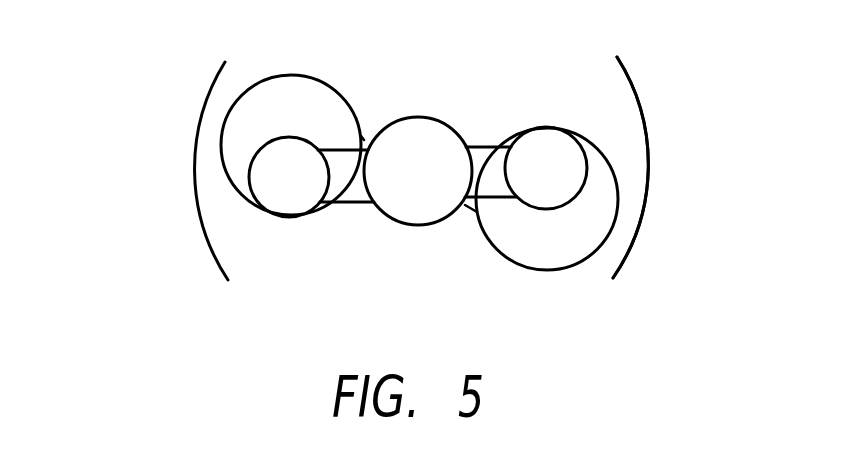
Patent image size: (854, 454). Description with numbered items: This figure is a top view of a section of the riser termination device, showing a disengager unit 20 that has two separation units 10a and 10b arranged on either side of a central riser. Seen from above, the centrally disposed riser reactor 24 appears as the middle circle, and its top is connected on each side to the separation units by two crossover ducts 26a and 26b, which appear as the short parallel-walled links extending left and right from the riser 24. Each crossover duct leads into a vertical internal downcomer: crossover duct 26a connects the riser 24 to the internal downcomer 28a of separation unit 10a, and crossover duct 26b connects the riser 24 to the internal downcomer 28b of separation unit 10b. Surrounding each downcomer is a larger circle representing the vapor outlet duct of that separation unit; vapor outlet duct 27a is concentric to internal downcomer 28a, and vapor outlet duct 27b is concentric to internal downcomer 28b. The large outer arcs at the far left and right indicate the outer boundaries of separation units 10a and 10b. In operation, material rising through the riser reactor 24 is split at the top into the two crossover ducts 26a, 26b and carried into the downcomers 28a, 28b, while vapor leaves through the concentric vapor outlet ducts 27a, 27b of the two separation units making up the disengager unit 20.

The separation unit 10a is at (217, 137).
The separation unit 10b is at (622, 215).
The disengager unit 20 is at (619, 74).
The riser reactor 24 is at (433, 140).
The crossover duct 26a is at (347, 188).
The crossover duct 26b is at (497, 183).
The vapor outlet duct 27a is at (278, 87).
The vapor outlet duct 27b is at (558, 252).
The internal downcomer 28a is at (273, 178).
The internal downcomer 28b is at (561, 160).